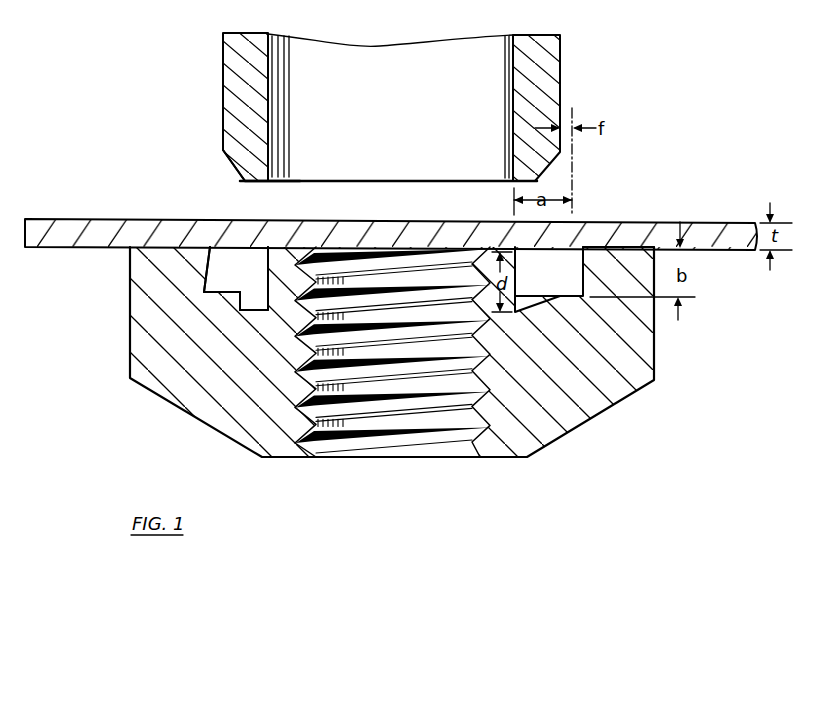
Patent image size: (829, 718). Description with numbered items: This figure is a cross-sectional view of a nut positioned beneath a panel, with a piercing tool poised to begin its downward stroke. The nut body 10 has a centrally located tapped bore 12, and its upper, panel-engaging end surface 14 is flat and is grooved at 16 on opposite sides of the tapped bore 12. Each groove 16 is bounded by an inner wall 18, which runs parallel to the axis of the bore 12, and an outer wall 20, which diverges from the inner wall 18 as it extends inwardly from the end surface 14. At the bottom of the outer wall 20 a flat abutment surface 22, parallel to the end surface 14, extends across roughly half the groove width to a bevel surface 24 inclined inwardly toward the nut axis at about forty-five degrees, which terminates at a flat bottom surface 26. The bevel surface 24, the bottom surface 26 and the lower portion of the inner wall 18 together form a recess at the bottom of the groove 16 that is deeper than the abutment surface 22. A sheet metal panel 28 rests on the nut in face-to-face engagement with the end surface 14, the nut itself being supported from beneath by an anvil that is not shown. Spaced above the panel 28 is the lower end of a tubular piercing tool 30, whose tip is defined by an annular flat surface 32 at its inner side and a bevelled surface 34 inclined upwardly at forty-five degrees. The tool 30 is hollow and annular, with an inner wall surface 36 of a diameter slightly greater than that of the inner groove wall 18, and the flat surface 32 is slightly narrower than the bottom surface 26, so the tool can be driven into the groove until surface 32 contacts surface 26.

The nut body 10 is at (196, 392).
The tapped bore 12 is at (437, 437).
The end surface 14 is at (634, 247).
The groove 16 is at (240, 262).
The inner wall 18 is at (263, 250).
The outer wall 20 is at (208, 270).
The abutment surface 22 is at (214, 294).
The bevel surface 24 is at (248, 302).
The bottom surface 26 is at (256, 308).
The sheet metal panel 28 is at (78, 224).
The tubular piercing tool 30 is at (560, 66).
The annular flat surface 32 is at (268, 183).
The bevelled surface 34 is at (240, 170).
The inner wall surface 36 is at (275, 98).